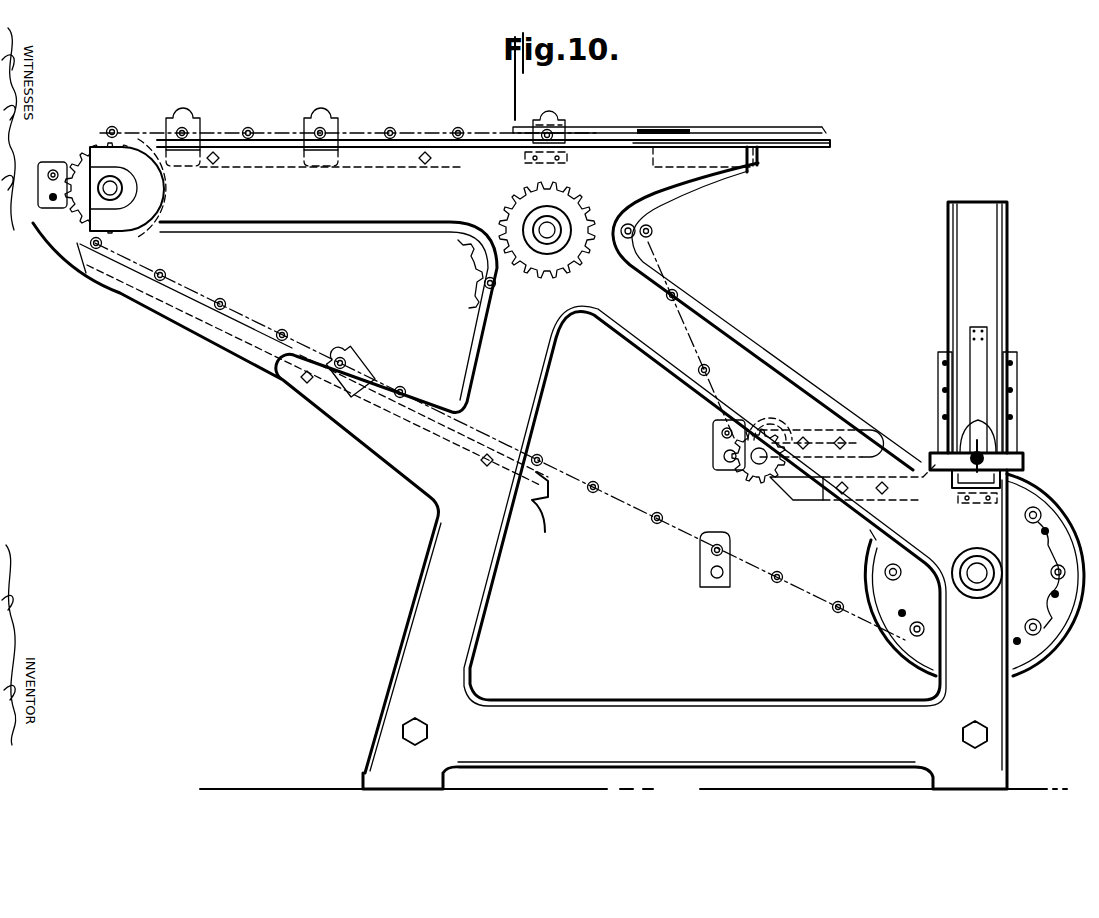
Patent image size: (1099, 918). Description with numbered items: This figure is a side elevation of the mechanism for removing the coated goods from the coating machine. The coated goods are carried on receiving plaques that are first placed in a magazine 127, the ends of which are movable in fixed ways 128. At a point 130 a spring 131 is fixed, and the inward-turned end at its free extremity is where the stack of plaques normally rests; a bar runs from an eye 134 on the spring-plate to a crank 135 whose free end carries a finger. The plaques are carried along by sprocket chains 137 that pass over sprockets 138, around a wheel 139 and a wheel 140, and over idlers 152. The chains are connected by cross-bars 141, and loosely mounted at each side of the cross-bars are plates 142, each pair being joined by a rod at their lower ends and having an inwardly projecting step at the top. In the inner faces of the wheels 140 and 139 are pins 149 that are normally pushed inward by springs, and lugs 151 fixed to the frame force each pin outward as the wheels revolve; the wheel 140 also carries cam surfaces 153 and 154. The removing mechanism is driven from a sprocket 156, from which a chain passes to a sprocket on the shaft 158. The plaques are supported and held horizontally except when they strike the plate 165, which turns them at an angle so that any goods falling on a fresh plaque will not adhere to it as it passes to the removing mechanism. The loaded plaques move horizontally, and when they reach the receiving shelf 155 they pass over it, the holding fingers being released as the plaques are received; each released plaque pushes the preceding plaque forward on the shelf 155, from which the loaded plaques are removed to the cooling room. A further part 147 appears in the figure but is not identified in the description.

The magazine 127 is at (949, 291).
The fixed ways 128 is at (939, 383).
The spring fixing point 130 is at (983, 327).
The spring 131 is at (978, 380).
The eye 134 is at (975, 430).
The crank 135 is at (962, 450).
The sprocket chains 137 is at (433, 133).
The sprockets 138 is at (69, 153).
The wheel 139 is at (457, 273).
The wheel 140 is at (974, 575).
The cross-bars 141 is at (188, 131).
The plates 142 is at (337, 126).
The pin 147 is at (718, 576).
The pins 149 is at (641, 226).
The lugs 151 is at (567, 160).
The idlers 152 is at (765, 470).
The cam surface 153 is at (1047, 495).
The cam surface 154 is at (1050, 500).
The receiving shelf 155 is at (669, 118).
The sprocket 156 is at (133, 233).
The shaft 158 is at (552, 226).
The plate 165 is at (545, 532).